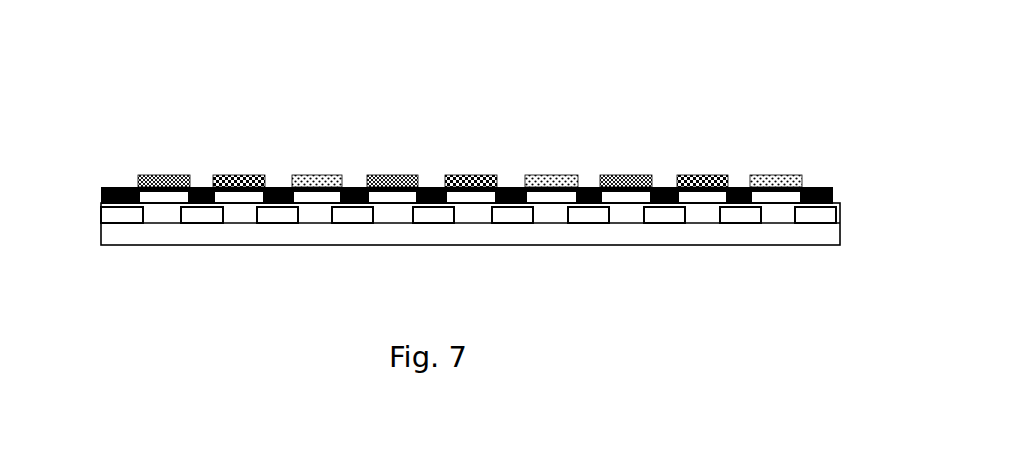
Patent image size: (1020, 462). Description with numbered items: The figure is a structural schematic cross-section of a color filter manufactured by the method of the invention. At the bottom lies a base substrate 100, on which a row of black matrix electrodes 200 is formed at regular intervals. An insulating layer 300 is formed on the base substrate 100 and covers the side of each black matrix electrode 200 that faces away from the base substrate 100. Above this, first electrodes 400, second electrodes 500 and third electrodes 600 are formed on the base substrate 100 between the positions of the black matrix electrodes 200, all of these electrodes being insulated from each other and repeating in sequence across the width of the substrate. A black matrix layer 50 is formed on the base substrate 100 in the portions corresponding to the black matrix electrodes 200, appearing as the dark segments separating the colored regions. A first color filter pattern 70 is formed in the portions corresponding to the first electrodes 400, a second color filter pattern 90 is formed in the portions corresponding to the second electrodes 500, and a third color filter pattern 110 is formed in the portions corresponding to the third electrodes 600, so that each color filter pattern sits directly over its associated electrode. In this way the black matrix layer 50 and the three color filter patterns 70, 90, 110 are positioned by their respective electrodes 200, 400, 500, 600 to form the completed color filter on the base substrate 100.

The base substrate 100 is at (110, 236).
The black matrix electrodes 200 is at (815, 291).
The insulating layer 300 is at (168, 215).
The black matrix layer 50 is at (821, 187).
The first color filter pattern 70 is at (622, 185).
The second color filter pattern 90 is at (698, 185).
The third color filter pattern 110 is at (767, 185).
The first electrodes 400 is at (636, 197).
The second electrodes 500 is at (717, 197).
The third electrodes 600 is at (782, 197).